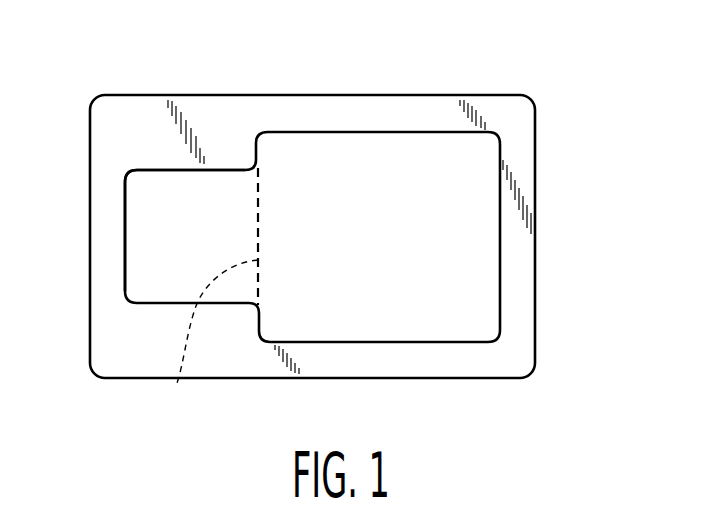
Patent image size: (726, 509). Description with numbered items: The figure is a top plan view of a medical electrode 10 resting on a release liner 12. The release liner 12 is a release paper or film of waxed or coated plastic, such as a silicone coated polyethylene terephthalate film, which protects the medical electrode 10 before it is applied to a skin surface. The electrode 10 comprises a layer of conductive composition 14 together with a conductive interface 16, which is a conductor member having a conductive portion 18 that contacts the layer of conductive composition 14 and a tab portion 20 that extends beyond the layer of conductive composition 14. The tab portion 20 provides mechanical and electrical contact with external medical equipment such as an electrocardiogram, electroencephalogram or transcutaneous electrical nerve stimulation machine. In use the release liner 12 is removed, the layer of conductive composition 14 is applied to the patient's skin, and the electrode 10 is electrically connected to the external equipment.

The medical electrode 10 is at (419, 124).
The release liner 12 is at (520, 120).
The layer of conductive composition 14 is at (176, 386).
The conductive interface 16 is at (492, 275).
The conductive portion 18 is at (277, 323).
The tab portion 20 is at (143, 245).